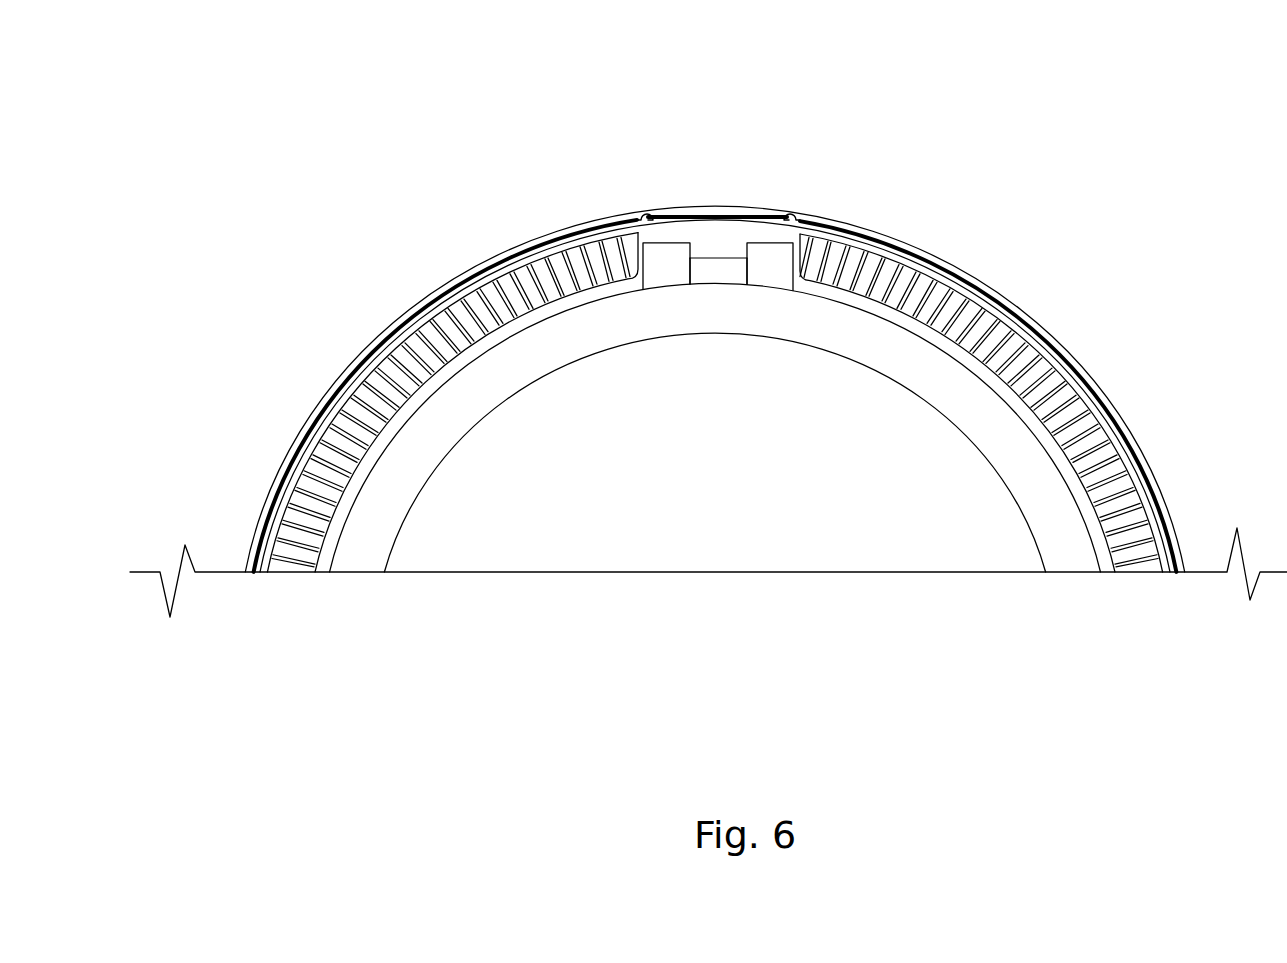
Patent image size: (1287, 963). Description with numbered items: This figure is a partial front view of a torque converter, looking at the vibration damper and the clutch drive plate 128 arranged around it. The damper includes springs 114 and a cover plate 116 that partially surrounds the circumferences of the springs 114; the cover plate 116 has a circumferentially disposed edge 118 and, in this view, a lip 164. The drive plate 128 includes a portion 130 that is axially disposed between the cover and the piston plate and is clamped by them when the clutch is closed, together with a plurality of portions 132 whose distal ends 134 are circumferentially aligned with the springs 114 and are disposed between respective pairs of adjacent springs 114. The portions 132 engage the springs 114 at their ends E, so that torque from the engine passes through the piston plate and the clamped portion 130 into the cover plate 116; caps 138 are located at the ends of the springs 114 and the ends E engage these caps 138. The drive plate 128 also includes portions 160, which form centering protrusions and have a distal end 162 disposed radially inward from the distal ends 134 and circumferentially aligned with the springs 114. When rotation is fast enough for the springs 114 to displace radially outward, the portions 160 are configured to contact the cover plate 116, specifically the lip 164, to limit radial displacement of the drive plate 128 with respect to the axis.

The springs 114 is at (458, 316).
The cover plate 116 is at (926, 247).
The circumferentially disposed edge 118 is at (955, 298).
The drive plate 128 is at (406, 399).
The portion 130 is at (540, 347).
The portions 132 is at (678, 249).
The distal ends 134 is at (783, 257).
The caps 138 is at (633, 247).
The portions 160 is at (717, 253).
The distal end 162 is at (735, 250).
The lip 164 is at (1000, 385).
The ends E is at (653, 218).